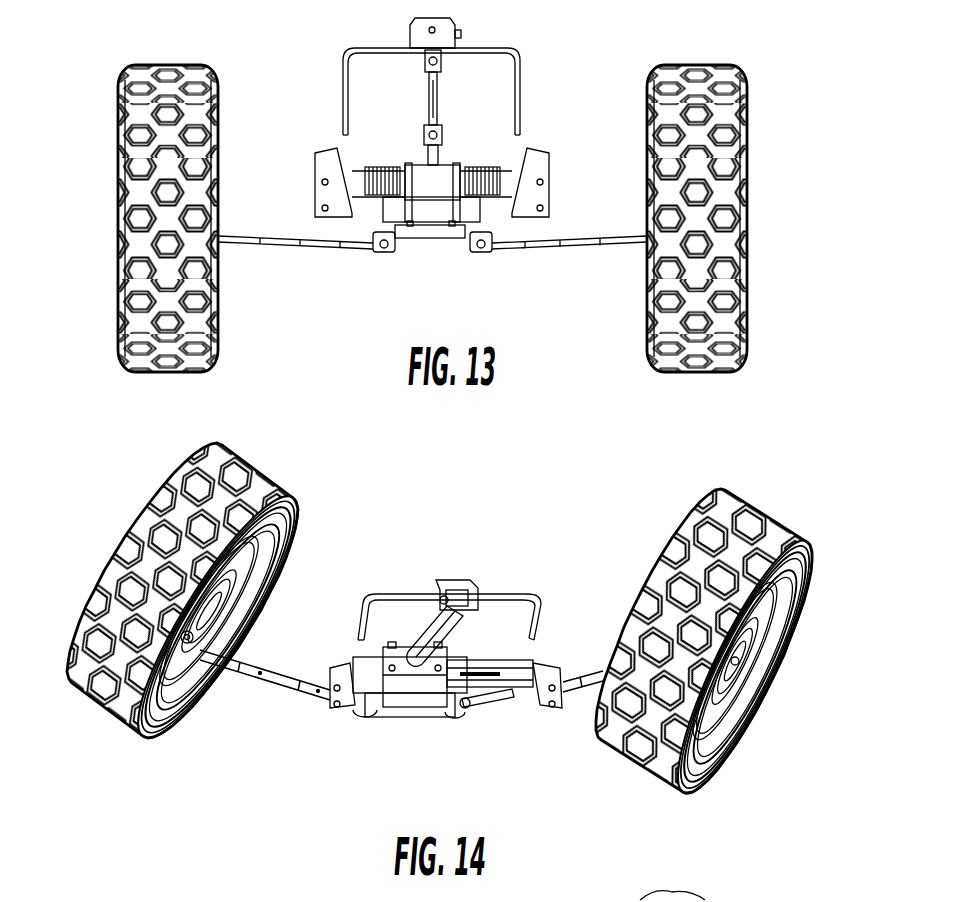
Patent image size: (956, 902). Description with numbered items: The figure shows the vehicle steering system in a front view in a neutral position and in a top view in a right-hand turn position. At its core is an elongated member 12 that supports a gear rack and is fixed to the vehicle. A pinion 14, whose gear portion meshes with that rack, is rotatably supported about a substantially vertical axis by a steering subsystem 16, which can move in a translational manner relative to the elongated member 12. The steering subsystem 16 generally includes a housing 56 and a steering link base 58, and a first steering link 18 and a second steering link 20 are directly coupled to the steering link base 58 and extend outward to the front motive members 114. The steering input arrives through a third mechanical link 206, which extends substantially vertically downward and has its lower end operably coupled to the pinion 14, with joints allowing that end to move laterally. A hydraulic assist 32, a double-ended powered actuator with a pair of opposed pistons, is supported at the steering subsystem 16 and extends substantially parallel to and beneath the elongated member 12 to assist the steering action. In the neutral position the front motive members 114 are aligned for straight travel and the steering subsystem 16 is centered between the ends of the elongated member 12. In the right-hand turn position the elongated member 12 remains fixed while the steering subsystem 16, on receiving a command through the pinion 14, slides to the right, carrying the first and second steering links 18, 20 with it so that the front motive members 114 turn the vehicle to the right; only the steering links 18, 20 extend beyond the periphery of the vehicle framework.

In FIG. 13, the elongated member 12 is at (508, 180).
In FIG. 14, the elongated member 12 is at (516, 668).
In FIG. 13, the pinion 14 is at (408, 84).
In FIG. 13, the steering subsystem 16 is at (432, 200).
In FIG. 14, the steering subsystem 16 is at (401, 664).
In FIG. 13, the first steering link 18 is at (306, 250).
In FIG. 14, the first steering link 18 is at (270, 686).
In FIG. 13, the second steering link 20 is at (567, 252).
In FIG. 14, the second steering link 20 is at (575, 692).
In FIG. 14, the hydraulic assist 32 is at (500, 692).
In FIG. 13, the housing 56 is at (443, 192).
In FIG. 14, the housing 56 is at (383, 658).
In FIG. 13, the steering link base 58 is at (424, 240).
In FIG. 14, the steering link base 58 is at (418, 707).
In FIG. 13, the front motive members 114 is at (746, 217).
In FIG. 14, the front motive members 114 is at (790, 662).
In FIG. 13, the third mechanical link 206 is at (438, 105).
In FIG. 14, the third mechanical link 206 is at (420, 632).